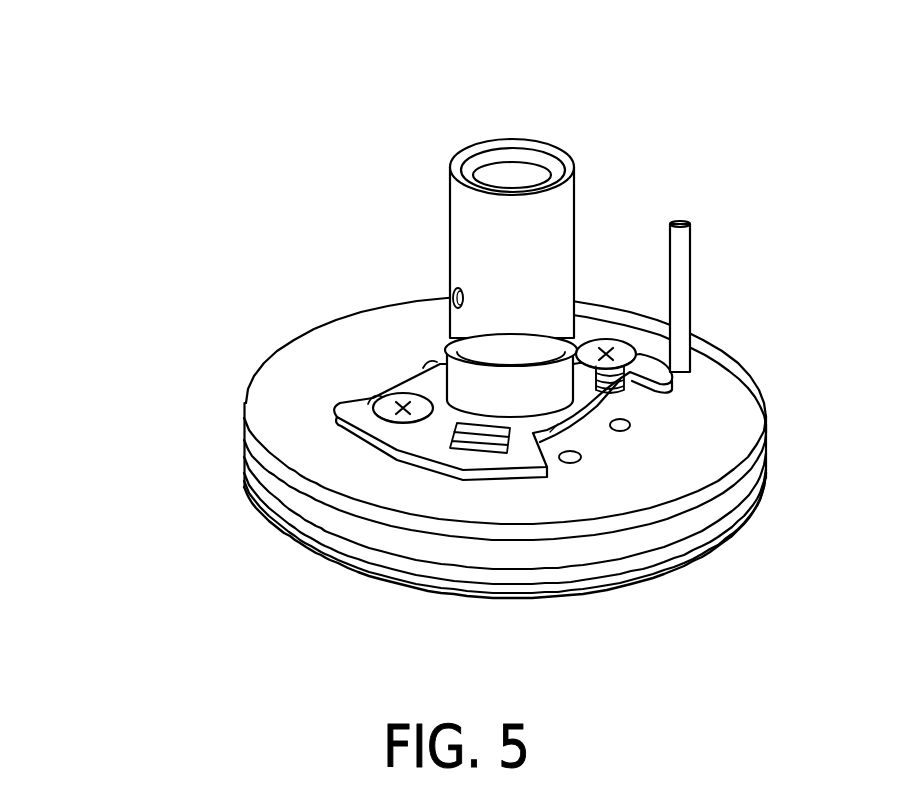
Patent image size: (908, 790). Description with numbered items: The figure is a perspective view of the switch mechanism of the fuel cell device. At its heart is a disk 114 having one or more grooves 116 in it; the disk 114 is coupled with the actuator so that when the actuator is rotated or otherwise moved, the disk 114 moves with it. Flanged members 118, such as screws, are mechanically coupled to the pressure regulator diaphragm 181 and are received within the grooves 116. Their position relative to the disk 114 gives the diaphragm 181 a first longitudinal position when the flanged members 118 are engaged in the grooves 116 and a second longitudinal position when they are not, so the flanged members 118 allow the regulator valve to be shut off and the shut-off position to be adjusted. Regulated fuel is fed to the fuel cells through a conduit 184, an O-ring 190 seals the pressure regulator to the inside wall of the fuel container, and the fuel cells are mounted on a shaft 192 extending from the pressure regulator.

The disk 114 is at (593, 325).
The grooves 116 is at (368, 410).
The flanged members 118 is at (626, 374).
The pressure regulator diaphragm 181 is at (714, 371).
The conduit 184 is at (686, 259).
The O-ring 190 is at (764, 473).
The shaft 192 is at (560, 207).